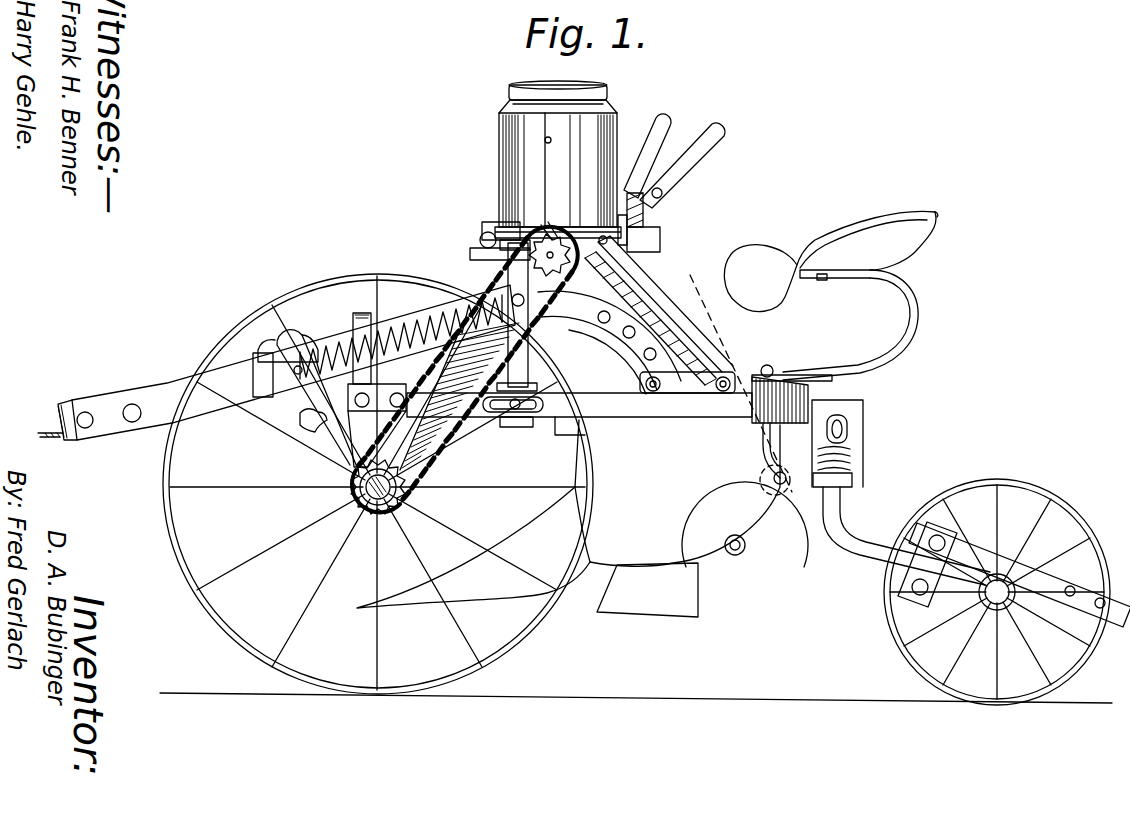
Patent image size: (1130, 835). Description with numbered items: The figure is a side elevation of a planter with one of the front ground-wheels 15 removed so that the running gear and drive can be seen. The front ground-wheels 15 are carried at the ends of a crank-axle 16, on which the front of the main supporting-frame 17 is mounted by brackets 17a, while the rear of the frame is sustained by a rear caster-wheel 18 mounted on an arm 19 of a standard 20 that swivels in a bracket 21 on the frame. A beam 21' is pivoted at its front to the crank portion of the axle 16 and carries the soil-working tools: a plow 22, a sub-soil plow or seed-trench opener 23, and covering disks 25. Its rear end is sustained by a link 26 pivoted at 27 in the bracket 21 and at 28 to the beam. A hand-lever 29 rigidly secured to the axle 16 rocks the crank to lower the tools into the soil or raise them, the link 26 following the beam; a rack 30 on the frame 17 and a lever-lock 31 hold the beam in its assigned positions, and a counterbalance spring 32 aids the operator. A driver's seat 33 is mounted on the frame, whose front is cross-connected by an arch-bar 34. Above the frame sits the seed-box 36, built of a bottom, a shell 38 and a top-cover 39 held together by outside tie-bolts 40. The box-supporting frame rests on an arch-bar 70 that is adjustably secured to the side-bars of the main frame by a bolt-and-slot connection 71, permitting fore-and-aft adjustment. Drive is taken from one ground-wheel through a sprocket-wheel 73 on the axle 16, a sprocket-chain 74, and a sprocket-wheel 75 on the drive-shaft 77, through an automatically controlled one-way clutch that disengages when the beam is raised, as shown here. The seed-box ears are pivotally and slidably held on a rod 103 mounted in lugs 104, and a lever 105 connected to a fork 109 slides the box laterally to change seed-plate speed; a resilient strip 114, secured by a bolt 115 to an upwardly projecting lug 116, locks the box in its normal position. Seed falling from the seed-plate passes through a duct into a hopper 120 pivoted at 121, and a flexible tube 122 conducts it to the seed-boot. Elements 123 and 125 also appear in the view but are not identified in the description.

The front ground-wheels 15 is at (327, 300).
The crank-axle 16 is at (366, 488).
The main supporting-frame 17 is at (606, 420).
The brackets 17a is at (352, 452).
The rear caster-wheel 18 is at (1022, 480).
The arm 19 is at (968, 592).
The standard 20 is at (832, 497).
The bracket 21 is at (854, 443).
The beam 21' is at (459, 358).
The plow 22 is at (568, 514).
The sub-soil plow or seed-trench opener 23 is at (652, 605).
The disks 25 is at (768, 567).
The link 26 is at (772, 415).
The pivot 27 is at (765, 492).
The pivot 28 is at (652, 280).
The hand-lever 29 is at (715, 372).
The rack 30 is at (350, 427).
The lever-lock 31 is at (682, 132).
The counterbalance spring 32 is at (400, 334).
The driver's seat 33 is at (912, 244).
The arch-bar 34 is at (362, 312).
The seed-box 36 is at (520, 160).
The shell 38 is at (612, 142).
The top-cover 39 is at (598, 88).
The outside tie-bolts 40 is at (547, 140).
The arch-bar 70 is at (522, 362).
The bolt-and-slot connection 71 is at (558, 390).
The sprocket-wheel 73 is at (398, 502).
The sprocket-chain 74 is at (441, 445).
The sprocket-wheel 75 is at (558, 240).
The drive-shaft 77 is at (548, 235).
The rod 103 is at (488, 232).
The lugs 104 is at (500, 222).
The lever 105 is at (502, 256).
The bracket or fork 109 is at (482, 250).
The resilient strip 114 is at (640, 244).
The bolt 115 is at (650, 215).
The upwardly projecting lug 116 is at (640, 228).
The hopper 120 is at (645, 278).
The pivot 121 is at (700, 372).
The flexible tube 122 is at (672, 322).
The frame bar 123 is at (579, 410).
The plate 125 is at (758, 376).